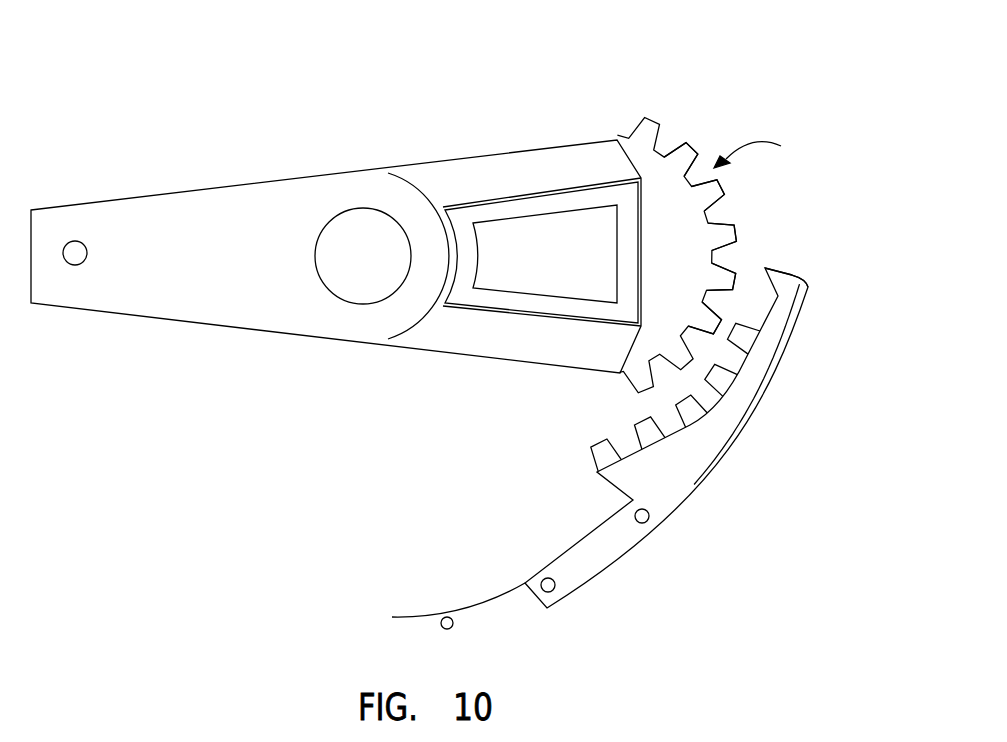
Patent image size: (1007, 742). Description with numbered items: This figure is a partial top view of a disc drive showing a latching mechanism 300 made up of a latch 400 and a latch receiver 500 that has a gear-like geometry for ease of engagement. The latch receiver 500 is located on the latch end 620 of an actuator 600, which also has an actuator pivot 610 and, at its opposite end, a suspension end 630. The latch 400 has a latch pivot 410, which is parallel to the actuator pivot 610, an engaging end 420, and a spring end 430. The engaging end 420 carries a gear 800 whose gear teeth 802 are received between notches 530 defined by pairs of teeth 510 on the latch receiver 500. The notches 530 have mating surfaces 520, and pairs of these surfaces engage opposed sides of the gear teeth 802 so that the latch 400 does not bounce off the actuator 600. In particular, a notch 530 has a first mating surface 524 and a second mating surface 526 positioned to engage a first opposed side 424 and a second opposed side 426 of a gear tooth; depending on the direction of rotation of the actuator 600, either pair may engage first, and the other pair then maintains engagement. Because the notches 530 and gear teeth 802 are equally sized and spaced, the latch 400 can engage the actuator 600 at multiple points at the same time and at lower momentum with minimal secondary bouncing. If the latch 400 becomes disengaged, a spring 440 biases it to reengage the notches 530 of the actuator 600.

The latching mechanism 300 is at (800, 77).
The latch 400 is at (680, 506).
The latch pivot 410 is at (645, 523).
The engaging end 420 is at (750, 416).
The first opposed side 424 is at (775, 327).
The second opposed side 426 is at (755, 318).
The spring end 430 is at (528, 578).
The spring 440 is at (491, 610).
The latch receiver 500 is at (657, 165).
The teeth 510 is at (692, 149).
The mating surfaces 520 is at (738, 246).
The first mating surface 524 is at (745, 285).
The second mating surface 526 is at (712, 300).
The notches 530 is at (767, 146).
The actuator 600 is at (128, 315).
The actuator pivot 610 is at (360, 240).
The latch end 620 is at (600, 140).
The suspension end 630 is at (75, 206).
The gear 800 is at (735, 375).
The gear teeth 802 is at (790, 283).